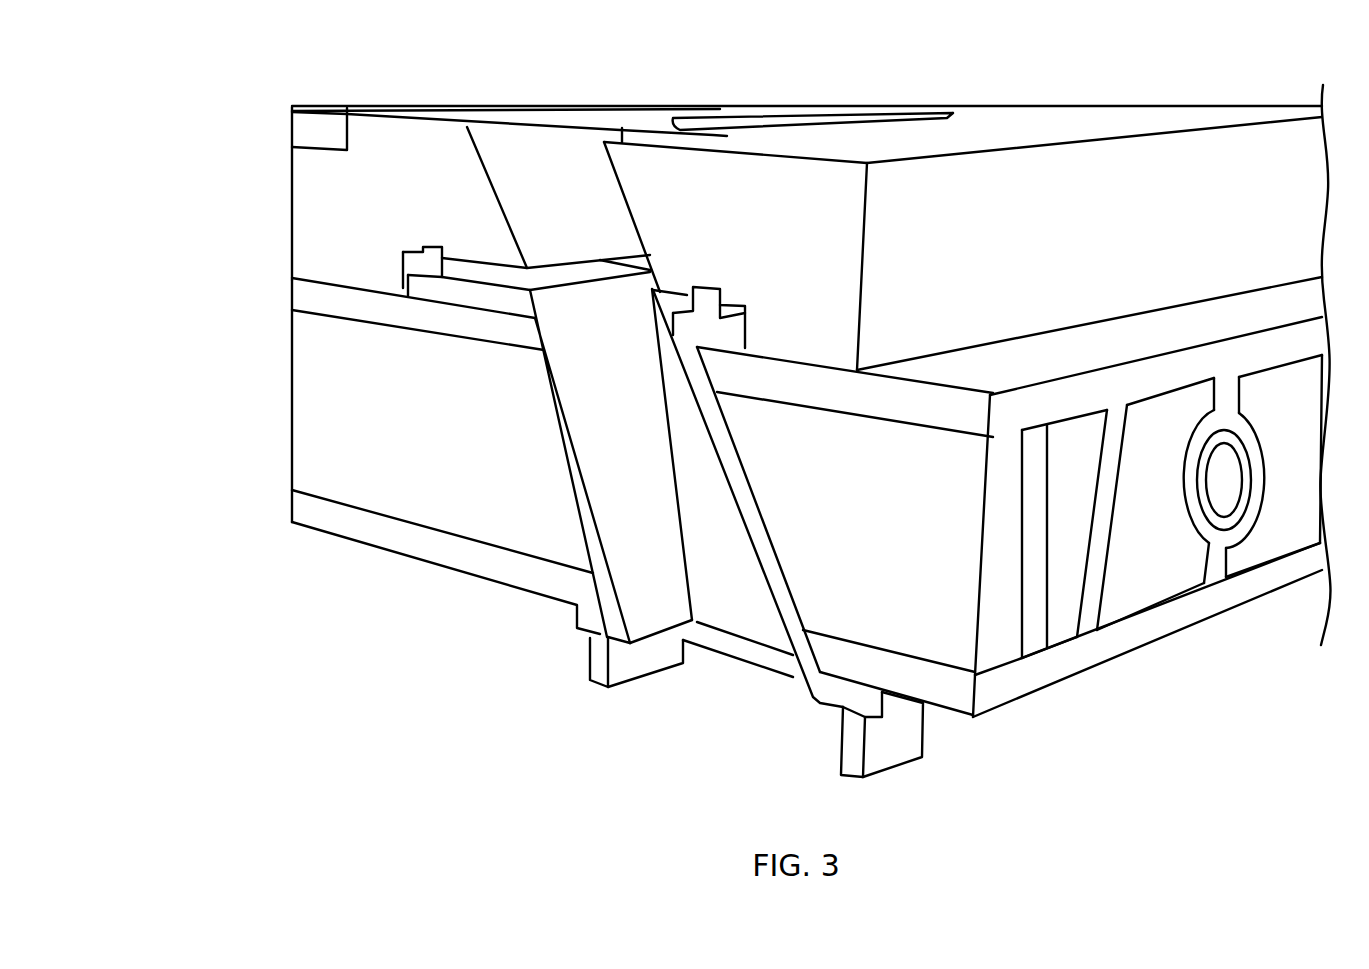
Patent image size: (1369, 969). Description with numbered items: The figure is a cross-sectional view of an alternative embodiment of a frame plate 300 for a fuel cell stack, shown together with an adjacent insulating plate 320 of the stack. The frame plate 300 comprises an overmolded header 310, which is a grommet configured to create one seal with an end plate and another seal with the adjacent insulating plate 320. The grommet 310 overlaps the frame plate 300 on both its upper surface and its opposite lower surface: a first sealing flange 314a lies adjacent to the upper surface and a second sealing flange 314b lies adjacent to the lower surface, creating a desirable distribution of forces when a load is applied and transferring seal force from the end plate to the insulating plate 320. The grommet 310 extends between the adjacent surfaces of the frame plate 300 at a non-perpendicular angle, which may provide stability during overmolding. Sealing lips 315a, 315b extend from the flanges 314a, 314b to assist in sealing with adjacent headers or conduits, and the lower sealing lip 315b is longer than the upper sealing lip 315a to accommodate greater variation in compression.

The frame plate 300 is at (271, 370).
The insulating plate 320 is at (271, 170).
The overmolded header 310 is at (603, 582).
The first sealing flange 314a is at (493, 297).
The second sealing flange 314b is at (842, 692).
The upper sealing lip 315a is at (430, 247).
The lower sealing lip 315b is at (845, 742).